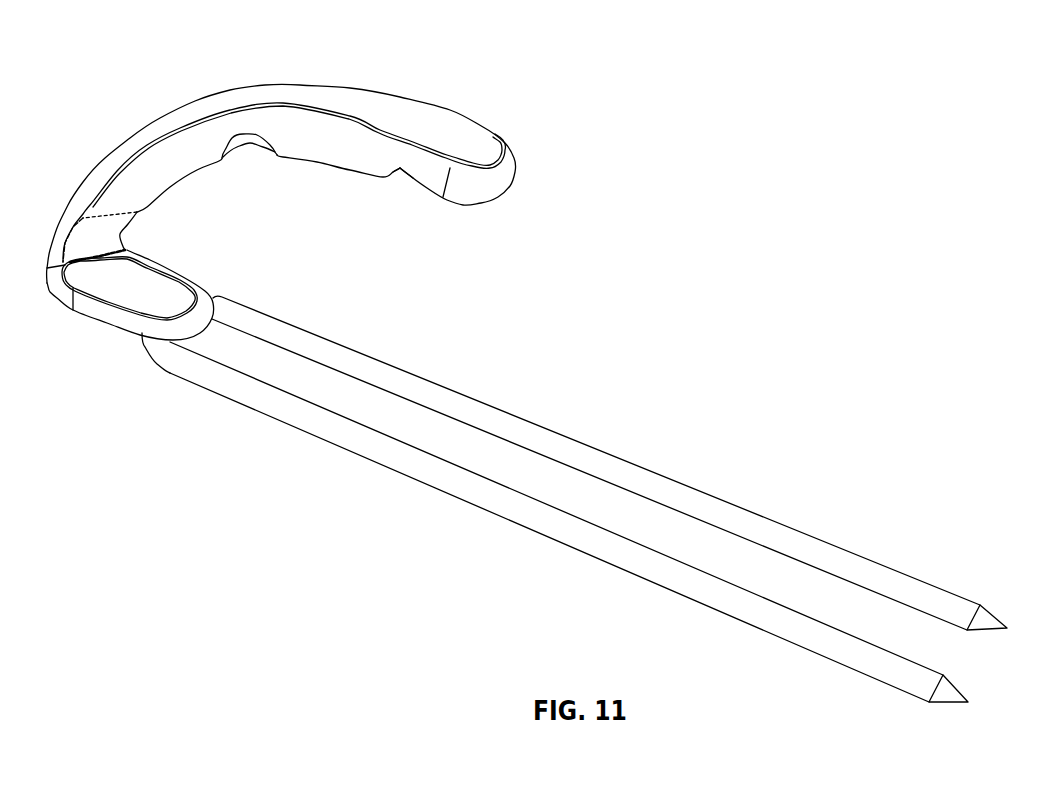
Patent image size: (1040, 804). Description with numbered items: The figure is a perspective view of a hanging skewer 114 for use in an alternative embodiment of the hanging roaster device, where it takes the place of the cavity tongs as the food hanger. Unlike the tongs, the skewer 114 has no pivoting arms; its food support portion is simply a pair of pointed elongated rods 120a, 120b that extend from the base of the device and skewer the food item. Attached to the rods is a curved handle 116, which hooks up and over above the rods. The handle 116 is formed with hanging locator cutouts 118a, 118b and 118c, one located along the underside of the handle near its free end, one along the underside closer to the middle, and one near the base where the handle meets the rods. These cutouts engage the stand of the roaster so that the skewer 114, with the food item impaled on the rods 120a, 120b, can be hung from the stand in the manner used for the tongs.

The hanging skewer 114 is at (805, 210).
The handle 116 is at (385, 90).
The hanging locator cutout 118a is at (403, 172).
The hanging locator cutout 118b is at (245, 152).
The hanging locator cutout 118c is at (107, 242).
The pointed elongated rod 120a is at (897, 688).
The pointed elongated rod 120b is at (925, 582).